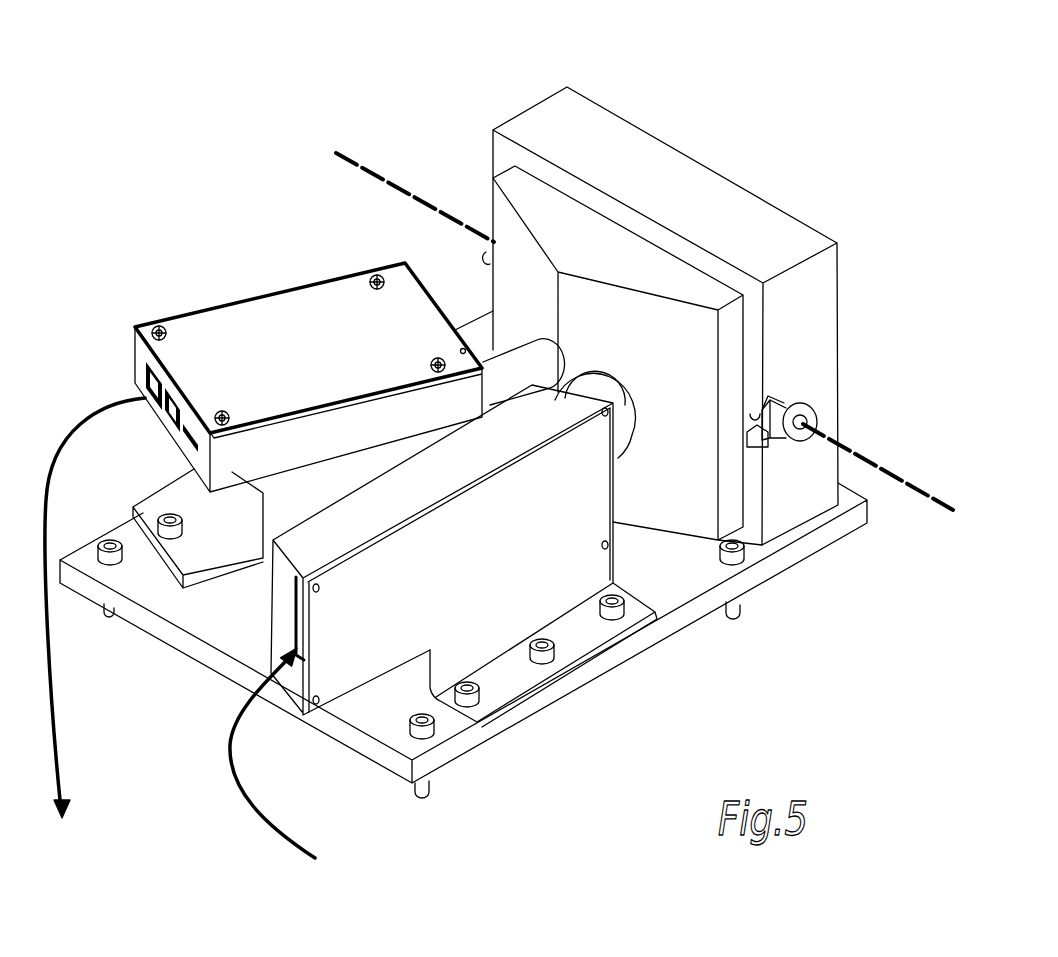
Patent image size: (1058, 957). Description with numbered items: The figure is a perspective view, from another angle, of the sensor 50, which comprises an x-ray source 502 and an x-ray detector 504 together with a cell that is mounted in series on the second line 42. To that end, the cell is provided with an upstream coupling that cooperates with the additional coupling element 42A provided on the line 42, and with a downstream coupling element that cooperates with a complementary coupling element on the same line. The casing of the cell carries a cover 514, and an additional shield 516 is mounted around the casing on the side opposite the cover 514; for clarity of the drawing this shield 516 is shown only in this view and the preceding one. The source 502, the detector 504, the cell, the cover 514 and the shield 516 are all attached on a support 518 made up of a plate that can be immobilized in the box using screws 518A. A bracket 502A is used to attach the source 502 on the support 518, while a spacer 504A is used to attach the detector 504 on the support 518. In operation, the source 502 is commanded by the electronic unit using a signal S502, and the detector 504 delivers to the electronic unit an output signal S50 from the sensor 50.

The sensor 50 is at (756, 133).
The second line 42 is at (907, 480).
The additional coupling element 42A is at (808, 413).
The x-ray source 502 is at (318, 555).
The bracket 502A is at (523, 562).
The x-ray detector 504 is at (305, 337).
The spacer 504A is at (281, 500).
The cover 514 is at (596, 250).
The additional shield 516 is at (803, 293).
The support 518 is at (218, 625).
The screws 518A is at (423, 797).
The output signal S50 is at (95, 610).
The signal S502 is at (297, 759).